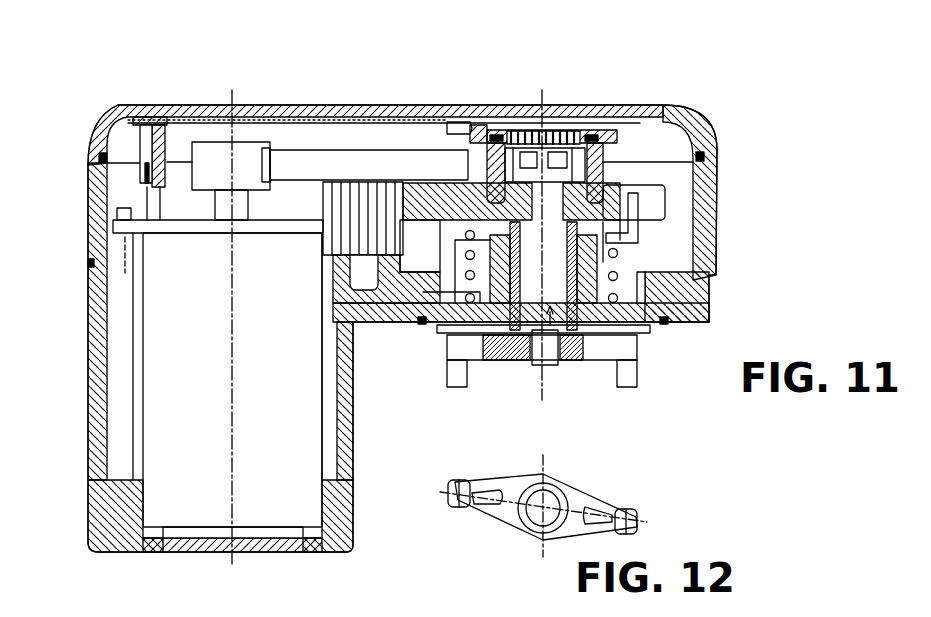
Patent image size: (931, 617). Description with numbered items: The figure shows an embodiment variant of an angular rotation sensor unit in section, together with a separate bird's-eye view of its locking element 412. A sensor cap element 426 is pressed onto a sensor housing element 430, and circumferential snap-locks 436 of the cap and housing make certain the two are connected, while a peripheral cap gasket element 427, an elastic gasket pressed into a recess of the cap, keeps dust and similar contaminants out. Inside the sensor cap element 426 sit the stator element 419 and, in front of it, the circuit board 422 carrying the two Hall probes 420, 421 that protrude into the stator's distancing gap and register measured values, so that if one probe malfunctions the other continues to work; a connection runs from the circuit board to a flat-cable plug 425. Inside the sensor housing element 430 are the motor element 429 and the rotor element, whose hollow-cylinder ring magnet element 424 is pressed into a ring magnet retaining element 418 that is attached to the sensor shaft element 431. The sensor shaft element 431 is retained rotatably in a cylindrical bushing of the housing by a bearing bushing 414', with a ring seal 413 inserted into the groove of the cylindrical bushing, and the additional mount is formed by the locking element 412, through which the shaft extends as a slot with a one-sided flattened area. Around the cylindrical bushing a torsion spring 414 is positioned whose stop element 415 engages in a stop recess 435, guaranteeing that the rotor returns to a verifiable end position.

In FIG. 11, the locking element 412 is at (633, 367).
In FIG. 12, the locking element 412 is at (517, 530).
In FIG. 11, the ring seal 413 is at (422, 324).
In FIG. 11, the torsion spring 414 is at (568, 299).
In FIG. 11, the bearing bushing 414' is at (533, 384).
In FIG. 11, the stop element 415 is at (640, 233).
In FIG. 11, the ring magnet retaining element 418 is at (605, 190).
In FIG. 11, the stator element 419 is at (487, 124).
In FIG. 11, the Hall probe 420 is at (520, 128).
In FIG. 11, the Hall probe 421 is at (582, 130).
In FIG. 11, the circuit board 422 is at (540, 148).
In FIG. 11, the ring magnet element 424 is at (618, 135).
In FIG. 11, the flat-cable plug 425 is at (167, 153).
In FIG. 11, the sensor cap element 426 is at (632, 180).
In FIG. 11, the cap gasket element 427 is at (704, 157).
In FIG. 11, the motor element 429 is at (168, 400).
In FIG. 11, the sensor housing element 430 is at (97, 492).
In FIG. 11, the sensor shaft element 431 is at (555, 360).
In FIG. 11, the stop recess 435 is at (665, 195).
In FIG. 11, the circumferential snap-locks 436 is at (85, 262).